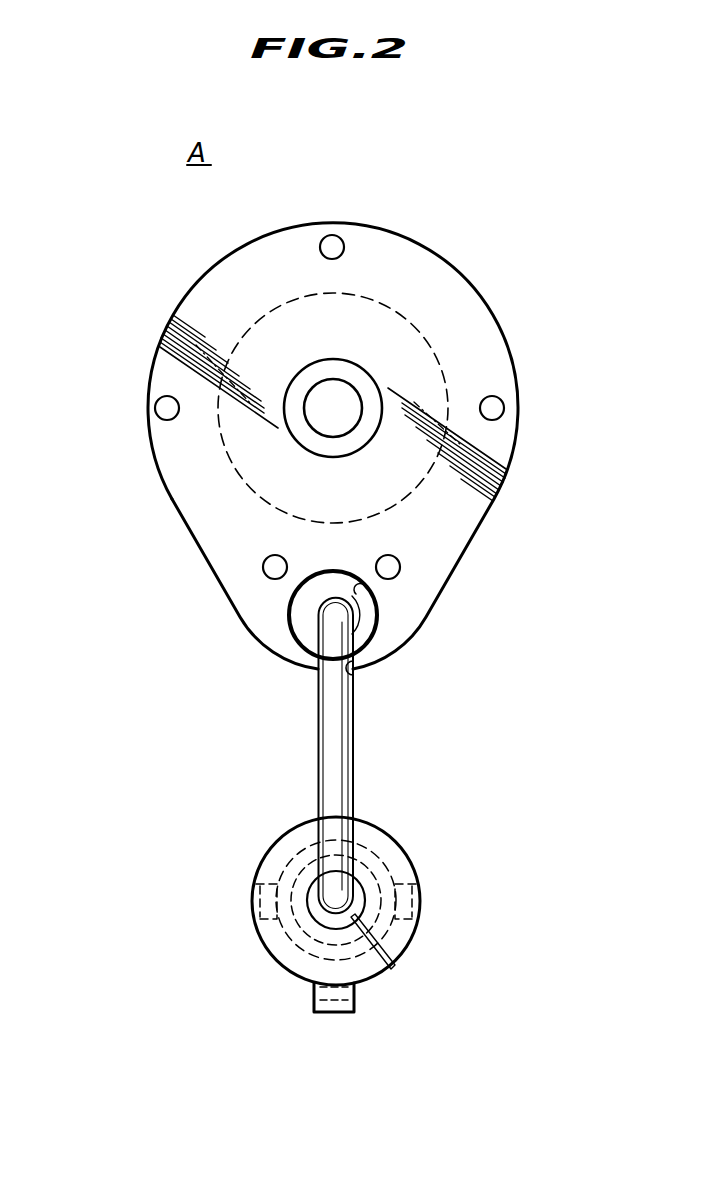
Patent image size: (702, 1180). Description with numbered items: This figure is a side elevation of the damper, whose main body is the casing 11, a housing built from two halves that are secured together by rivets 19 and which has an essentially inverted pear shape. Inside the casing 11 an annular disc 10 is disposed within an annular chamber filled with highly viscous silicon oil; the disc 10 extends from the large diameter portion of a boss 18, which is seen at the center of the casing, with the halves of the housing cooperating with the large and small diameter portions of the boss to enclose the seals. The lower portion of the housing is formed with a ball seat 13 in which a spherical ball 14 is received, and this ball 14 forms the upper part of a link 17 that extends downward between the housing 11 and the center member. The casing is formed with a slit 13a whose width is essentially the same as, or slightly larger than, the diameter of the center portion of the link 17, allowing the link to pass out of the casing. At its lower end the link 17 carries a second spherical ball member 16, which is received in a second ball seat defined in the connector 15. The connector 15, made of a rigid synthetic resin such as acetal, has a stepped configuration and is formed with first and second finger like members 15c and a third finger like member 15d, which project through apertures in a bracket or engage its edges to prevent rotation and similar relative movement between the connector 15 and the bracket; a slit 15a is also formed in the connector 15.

The annular disc 10 is at (443, 370).
The casing 11 is at (465, 295).
The ball seat 13 is at (373, 593).
The slit 13a is at (354, 683).
The spherical ball 14 is at (365, 623).
The connector 15 is at (418, 852).
The slit 15a is at (393, 967).
The finger like members 15c is at (258, 900).
The finger like member 15d is at (335, 1013).
The second spherical ball member 16 is at (300, 875).
The link 17 is at (340, 757).
The boss 18 is at (302, 378).
The rivets 19 is at (337, 245).